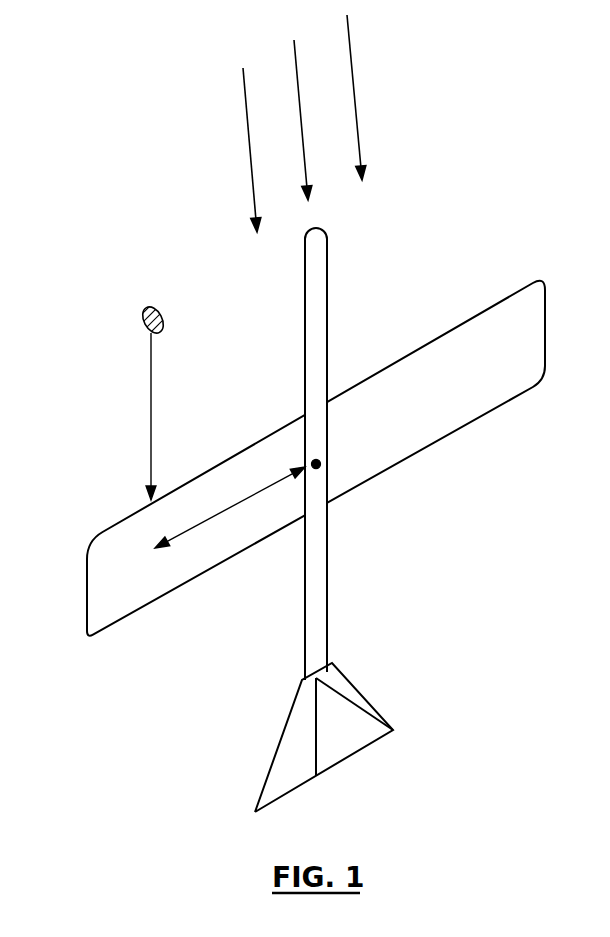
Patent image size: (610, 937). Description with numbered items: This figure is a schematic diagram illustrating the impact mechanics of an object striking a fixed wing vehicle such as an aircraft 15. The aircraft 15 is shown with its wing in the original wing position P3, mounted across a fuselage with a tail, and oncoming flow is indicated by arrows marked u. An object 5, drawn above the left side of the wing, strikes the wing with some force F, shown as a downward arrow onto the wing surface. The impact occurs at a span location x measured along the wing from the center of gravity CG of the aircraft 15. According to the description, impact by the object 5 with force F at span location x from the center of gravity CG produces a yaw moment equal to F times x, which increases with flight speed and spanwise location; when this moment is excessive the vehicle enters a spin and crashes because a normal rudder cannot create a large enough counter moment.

The object 5 is at (143, 321).
The aircraft 15 is at (80, 550).
The original wing position P3 is at (559, 330).
The flow velocity u is at (304, 122).
The force F is at (159, 416).
The span location x is at (230, 507).
The center of gravity CG is at (344, 465).